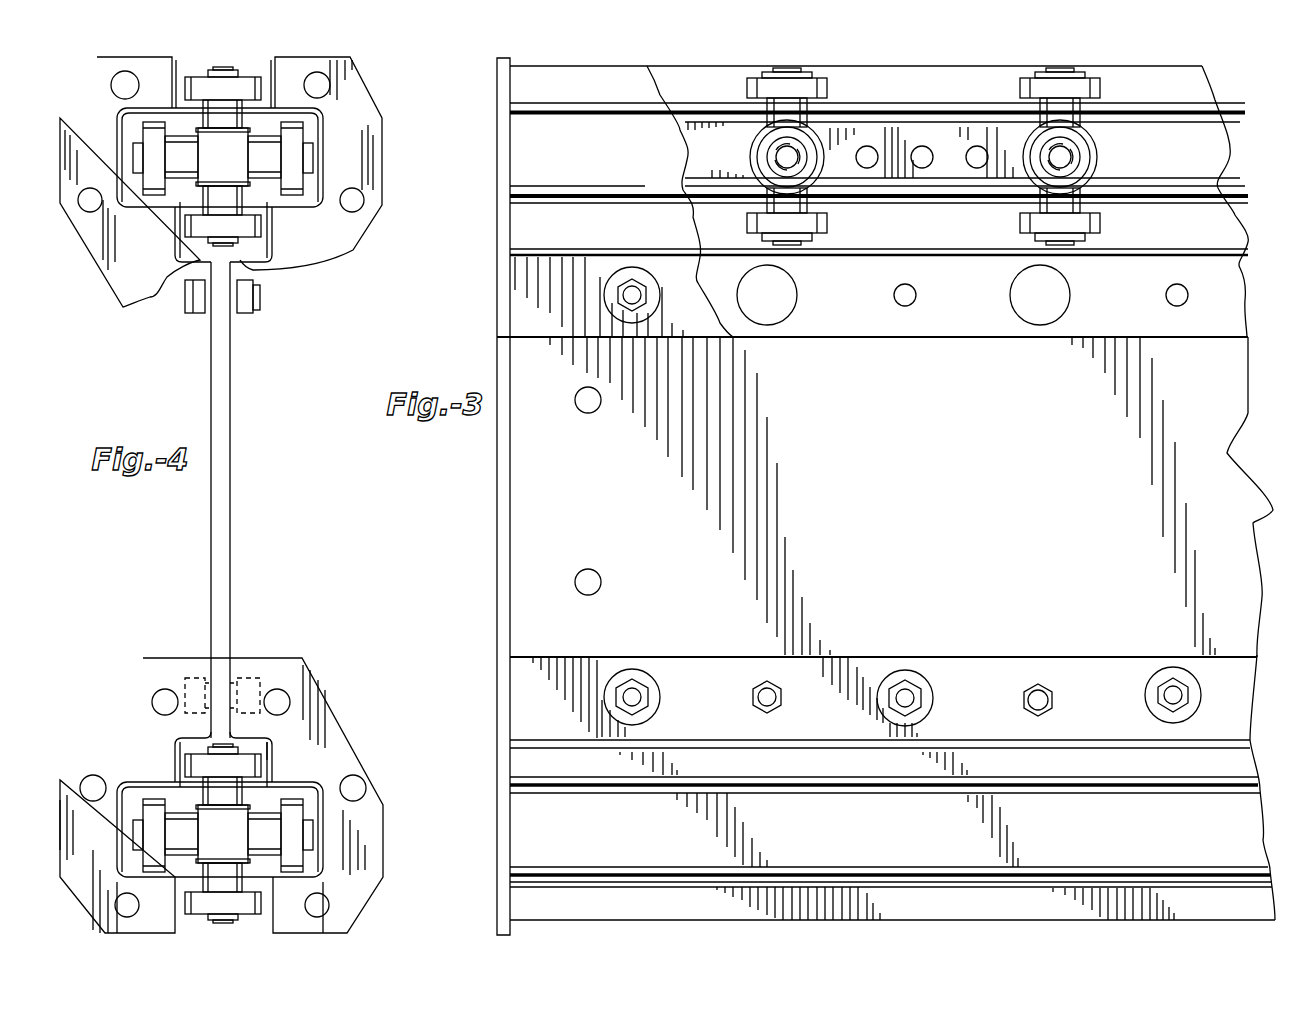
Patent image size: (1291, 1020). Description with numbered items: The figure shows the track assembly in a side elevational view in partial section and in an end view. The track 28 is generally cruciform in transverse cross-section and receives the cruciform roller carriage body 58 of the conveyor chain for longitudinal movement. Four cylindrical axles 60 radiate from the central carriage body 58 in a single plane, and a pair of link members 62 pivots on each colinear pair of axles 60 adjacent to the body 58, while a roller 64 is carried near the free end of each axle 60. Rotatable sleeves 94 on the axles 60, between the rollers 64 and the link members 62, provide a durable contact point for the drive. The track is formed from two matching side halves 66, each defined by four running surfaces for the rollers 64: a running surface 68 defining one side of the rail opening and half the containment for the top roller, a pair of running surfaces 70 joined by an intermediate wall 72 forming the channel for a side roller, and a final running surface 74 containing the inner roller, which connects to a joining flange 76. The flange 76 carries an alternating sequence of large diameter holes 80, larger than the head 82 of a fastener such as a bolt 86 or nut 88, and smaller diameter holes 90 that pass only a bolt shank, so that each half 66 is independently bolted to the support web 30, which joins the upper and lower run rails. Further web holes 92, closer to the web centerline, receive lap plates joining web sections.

In FIG. 3, the track 28 is at (540, 162).
In FIG. 4, the track 28 is at (335, 700).
In FIG. 3, the support web 30 is at (520, 575).
In FIG. 4, the support web 30 is at (232, 505).
In FIG. 4, the cruciform roller carriage body 58 is at (232, 169).
In FIG. 4, the cylindrical axles 60 is at (228, 72).
In FIG. 4, the link members 62 is at (196, 172).
In FIG. 4, the roller 64 is at (192, 86).
In FIG. 4, the side halves 66 is at (130, 782).
In FIG. 4, the running surface 68 is at (262, 914).
In FIG. 4, the running surfaces 70 is at (300, 784).
In FIG. 4, the intermediate wall 72 is at (330, 838).
In FIG. 4, the running surface 74 is at (270, 758).
In FIG. 4, the joining flange 76 is at (233, 667).
In FIG. 3, the large diameter holes 80 is at (797, 299).
In FIG. 3, the head 82 is at (646, 284).
In FIG. 4, the bolt 86 is at (193, 314).
In FIG. 4, the nut 88 is at (244, 314).
In FIG. 3, the smaller diameter holes 90 is at (914, 301).
In FIG. 3, the web holes 92 is at (590, 413).
In FIG. 4, the sleeves 94 is at (220, 791).